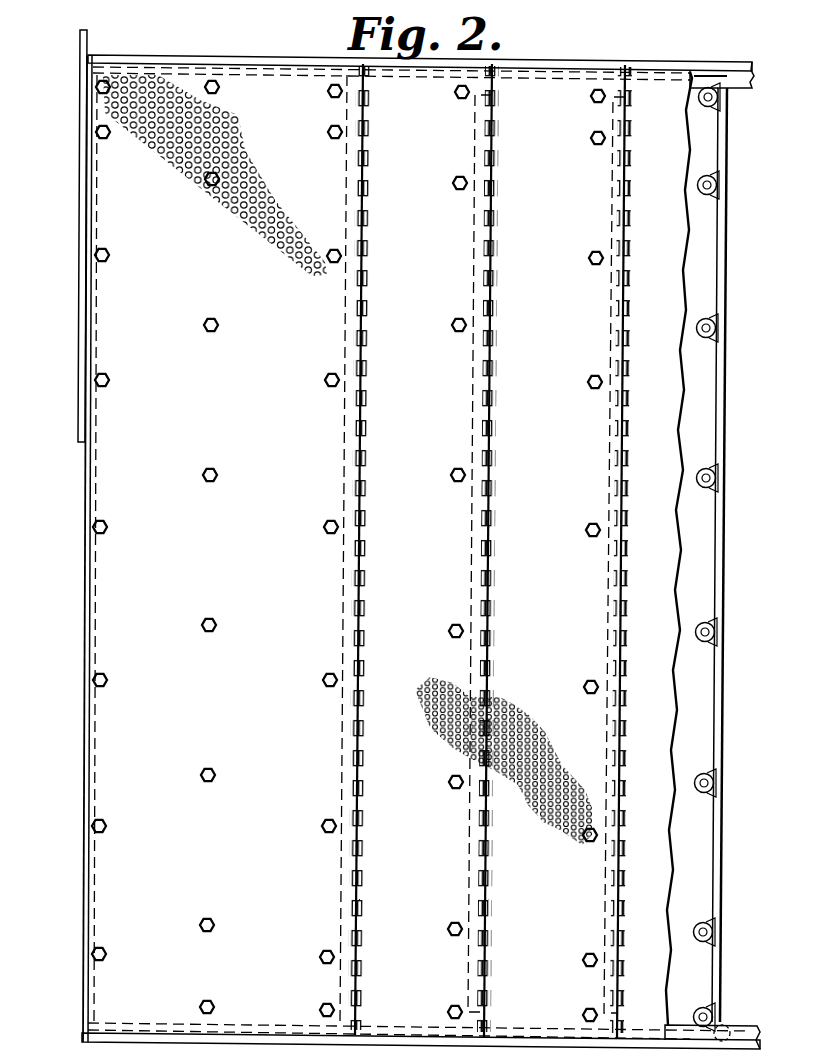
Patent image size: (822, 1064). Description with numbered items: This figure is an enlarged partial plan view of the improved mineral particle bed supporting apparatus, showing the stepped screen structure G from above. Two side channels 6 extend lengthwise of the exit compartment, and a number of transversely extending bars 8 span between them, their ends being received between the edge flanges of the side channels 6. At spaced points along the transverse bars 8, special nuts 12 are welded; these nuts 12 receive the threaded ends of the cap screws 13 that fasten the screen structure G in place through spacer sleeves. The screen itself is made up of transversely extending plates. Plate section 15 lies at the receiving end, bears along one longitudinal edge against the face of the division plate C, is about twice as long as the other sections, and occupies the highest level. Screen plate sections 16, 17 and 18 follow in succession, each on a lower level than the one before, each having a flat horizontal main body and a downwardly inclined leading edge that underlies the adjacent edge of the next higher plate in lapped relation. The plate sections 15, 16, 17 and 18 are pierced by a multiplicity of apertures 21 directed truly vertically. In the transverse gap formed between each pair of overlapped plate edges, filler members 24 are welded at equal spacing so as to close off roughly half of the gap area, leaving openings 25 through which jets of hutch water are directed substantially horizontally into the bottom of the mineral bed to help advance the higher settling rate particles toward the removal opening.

The side channel 6 is at (557, 62).
The transverse bar 8 is at (722, 691).
The special nut 12 is at (713, 341).
The cap screw 13 is at (106, 522).
The plate section 15 is at (218, 536).
The screen plate section 16 is at (420, 540).
The screen plate section 17 is at (555, 545).
The screen plate section 18 is at (657, 571).
The aperture 21 is at (428, 715).
The filler member 24 is at (362, 667).
The opening 25 is at (361, 781).
The division plate C is at (82, 380).
The screen structure G is at (723, 529).